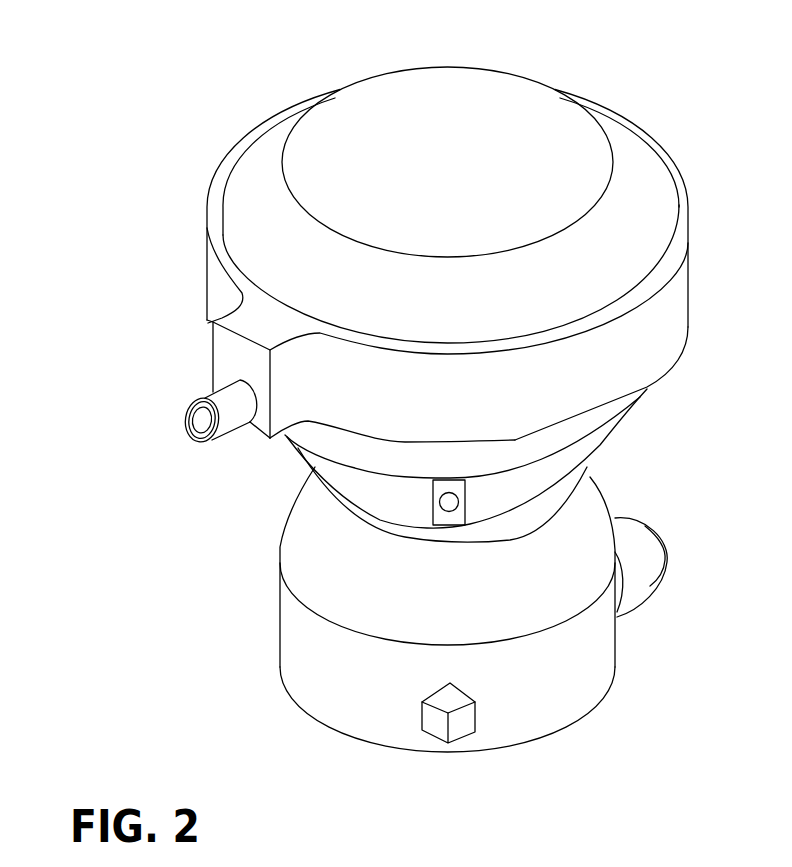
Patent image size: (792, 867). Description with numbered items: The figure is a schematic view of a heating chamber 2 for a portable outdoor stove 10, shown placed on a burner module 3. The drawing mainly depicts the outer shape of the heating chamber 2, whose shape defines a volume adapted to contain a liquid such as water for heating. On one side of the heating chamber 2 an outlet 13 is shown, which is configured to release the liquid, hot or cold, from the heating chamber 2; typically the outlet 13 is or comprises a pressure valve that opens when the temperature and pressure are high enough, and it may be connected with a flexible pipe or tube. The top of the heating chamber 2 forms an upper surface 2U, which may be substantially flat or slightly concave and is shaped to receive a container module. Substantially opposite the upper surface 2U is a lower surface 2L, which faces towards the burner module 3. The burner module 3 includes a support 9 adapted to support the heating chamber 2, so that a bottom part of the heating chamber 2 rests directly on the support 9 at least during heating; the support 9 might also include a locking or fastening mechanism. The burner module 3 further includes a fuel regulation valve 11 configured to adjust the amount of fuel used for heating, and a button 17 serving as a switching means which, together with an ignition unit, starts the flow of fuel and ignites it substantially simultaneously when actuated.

The heating chamber 2 is at (198, 67).
The upper surface 2U is at (493, 90).
The lower surface 2L is at (313, 440).
The portable outdoor stove 10 is at (757, 82).
The outlet 13 is at (187, 427).
The support 9 is at (587, 478).
The fuel regulation valve 11 is at (653, 547).
The burner module 3 is at (300, 675).
The button 17 is at (466, 735).